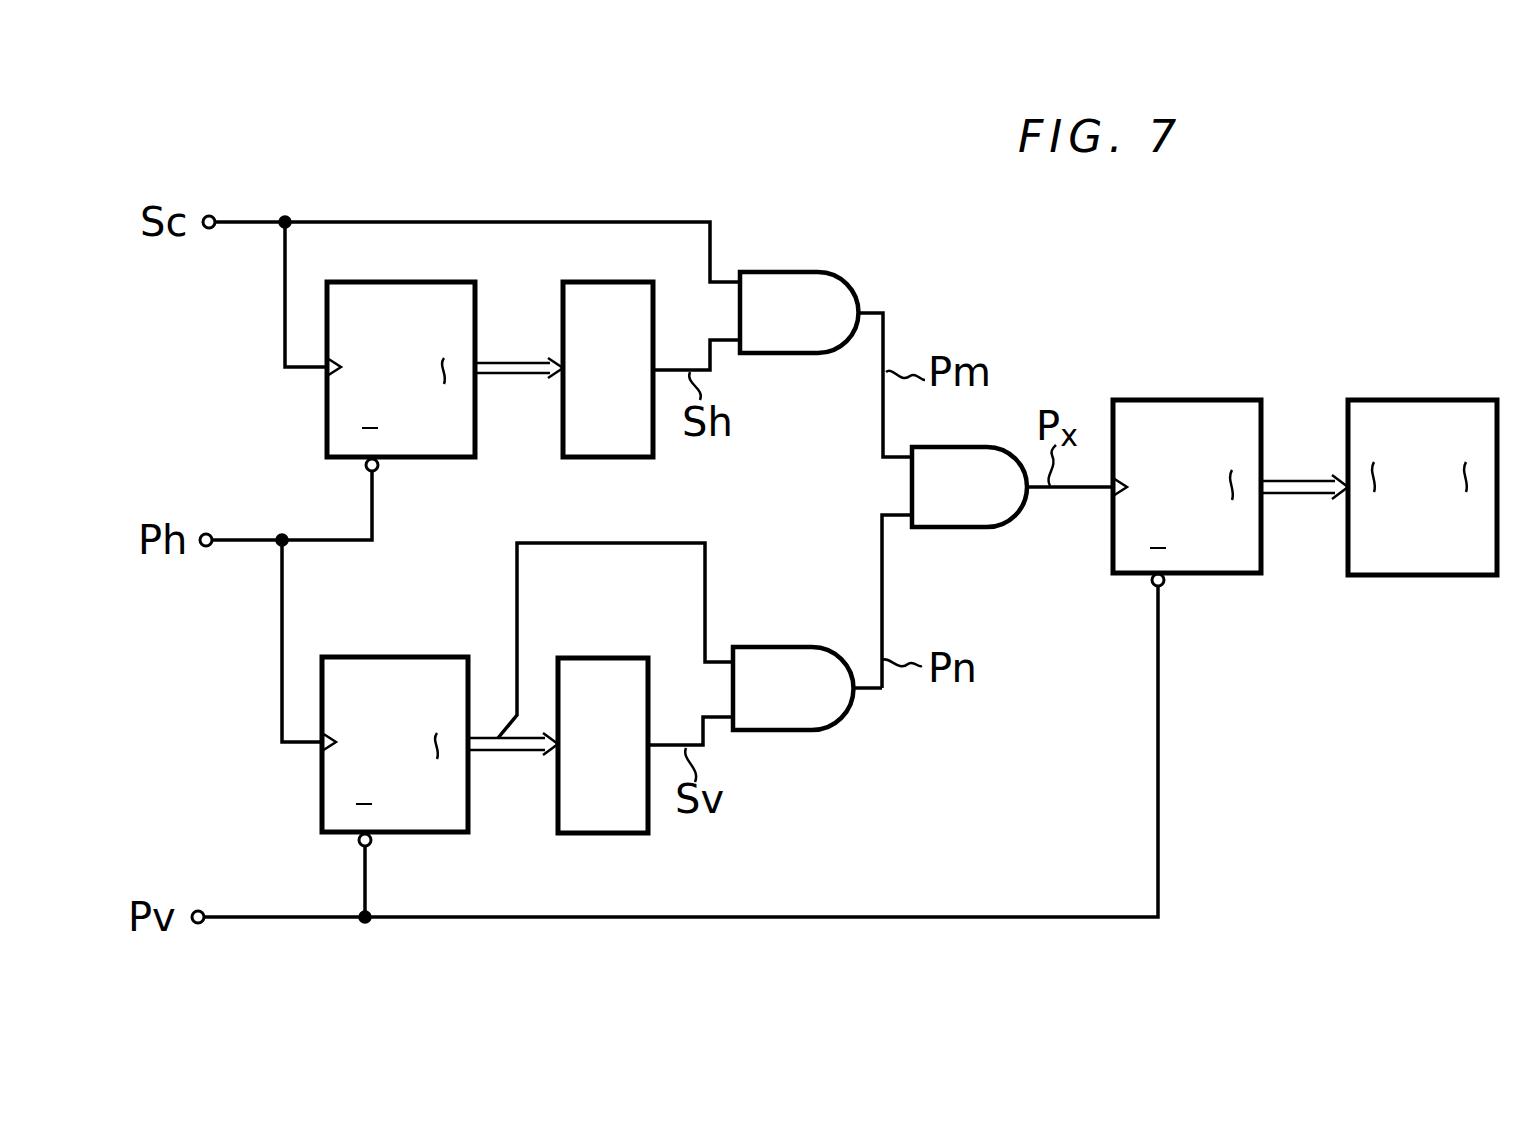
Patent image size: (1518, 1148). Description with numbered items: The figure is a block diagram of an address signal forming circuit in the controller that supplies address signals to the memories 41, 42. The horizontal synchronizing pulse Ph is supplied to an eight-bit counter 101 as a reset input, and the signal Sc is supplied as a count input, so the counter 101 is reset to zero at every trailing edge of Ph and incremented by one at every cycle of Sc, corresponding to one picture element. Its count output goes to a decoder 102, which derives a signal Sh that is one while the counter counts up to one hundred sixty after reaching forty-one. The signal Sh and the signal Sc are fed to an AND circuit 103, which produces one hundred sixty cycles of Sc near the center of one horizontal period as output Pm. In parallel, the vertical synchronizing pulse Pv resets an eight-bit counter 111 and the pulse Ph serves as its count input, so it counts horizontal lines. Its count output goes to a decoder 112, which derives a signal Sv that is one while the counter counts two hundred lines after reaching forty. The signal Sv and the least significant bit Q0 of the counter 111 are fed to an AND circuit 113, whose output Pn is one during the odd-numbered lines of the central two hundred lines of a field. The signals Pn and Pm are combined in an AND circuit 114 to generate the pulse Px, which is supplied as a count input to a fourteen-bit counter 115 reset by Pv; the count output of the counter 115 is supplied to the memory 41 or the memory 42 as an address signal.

The 8-bit counter 101 is at (417, 460).
The decoder 102 is at (590, 460).
The AND circuit 103 is at (813, 356).
The 8-bit counter 111 is at (410, 835).
The decoder 112 is at (582, 836).
The AND circuit 113 is at (802, 733).
The AND circuit 114 is at (970, 530).
The 14-bit counter 115 is at (1210, 576).
The memory 41 is at (1422, 523).
The memory 42 is at (1380, 578).